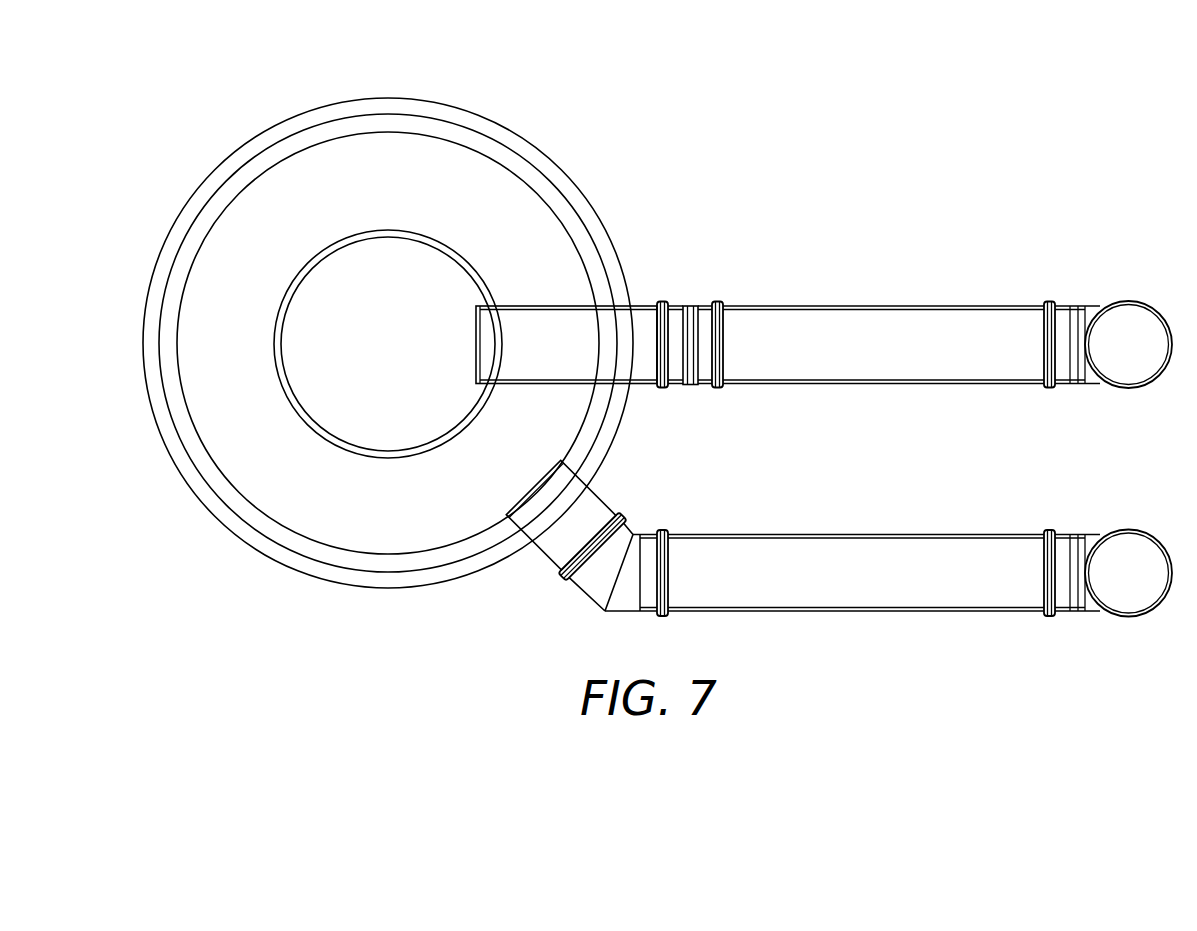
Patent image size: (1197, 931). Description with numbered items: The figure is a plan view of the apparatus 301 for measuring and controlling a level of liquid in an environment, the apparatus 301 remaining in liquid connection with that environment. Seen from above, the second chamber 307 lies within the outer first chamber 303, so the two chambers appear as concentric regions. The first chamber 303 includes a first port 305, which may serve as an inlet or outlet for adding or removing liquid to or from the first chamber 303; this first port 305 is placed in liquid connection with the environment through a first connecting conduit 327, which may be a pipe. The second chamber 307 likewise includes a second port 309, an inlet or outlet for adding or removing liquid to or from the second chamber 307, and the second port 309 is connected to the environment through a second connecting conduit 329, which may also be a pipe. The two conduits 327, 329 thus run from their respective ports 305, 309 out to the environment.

The apparatus 301 is at (184, 131).
The first chamber 303 is at (325, 390).
The first port 305 is at (487, 343).
The second chamber 307 is at (389, 155).
The second port 309 is at (537, 497).
The first connecting conduit 327 is at (905, 322).
The second connecting conduit 329 is at (908, 602).